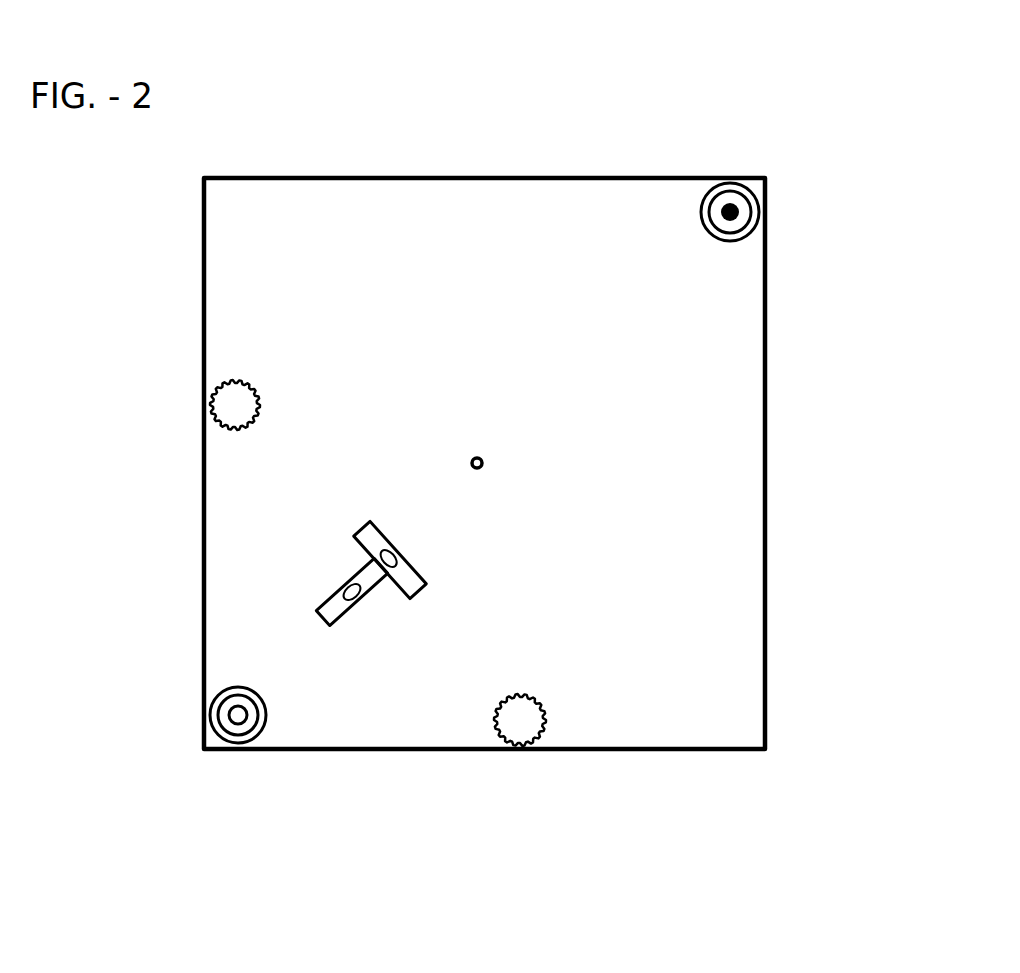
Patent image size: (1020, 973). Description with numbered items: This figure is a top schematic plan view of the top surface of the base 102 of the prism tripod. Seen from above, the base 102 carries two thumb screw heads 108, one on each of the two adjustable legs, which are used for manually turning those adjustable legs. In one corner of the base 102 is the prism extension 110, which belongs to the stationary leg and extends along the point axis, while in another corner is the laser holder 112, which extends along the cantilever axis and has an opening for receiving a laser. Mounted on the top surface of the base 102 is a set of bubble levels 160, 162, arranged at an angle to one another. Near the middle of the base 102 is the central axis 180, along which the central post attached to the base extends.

The base 102 is at (690, 468).
The thumb screw head 108 is at (237, 405).
The prism extension 110 is at (753, 188).
The laser holder 112 is at (216, 711).
The bubble level 160 is at (332, 612).
The bubble level 162 is at (378, 527).
The central axis 180 is at (477, 470).